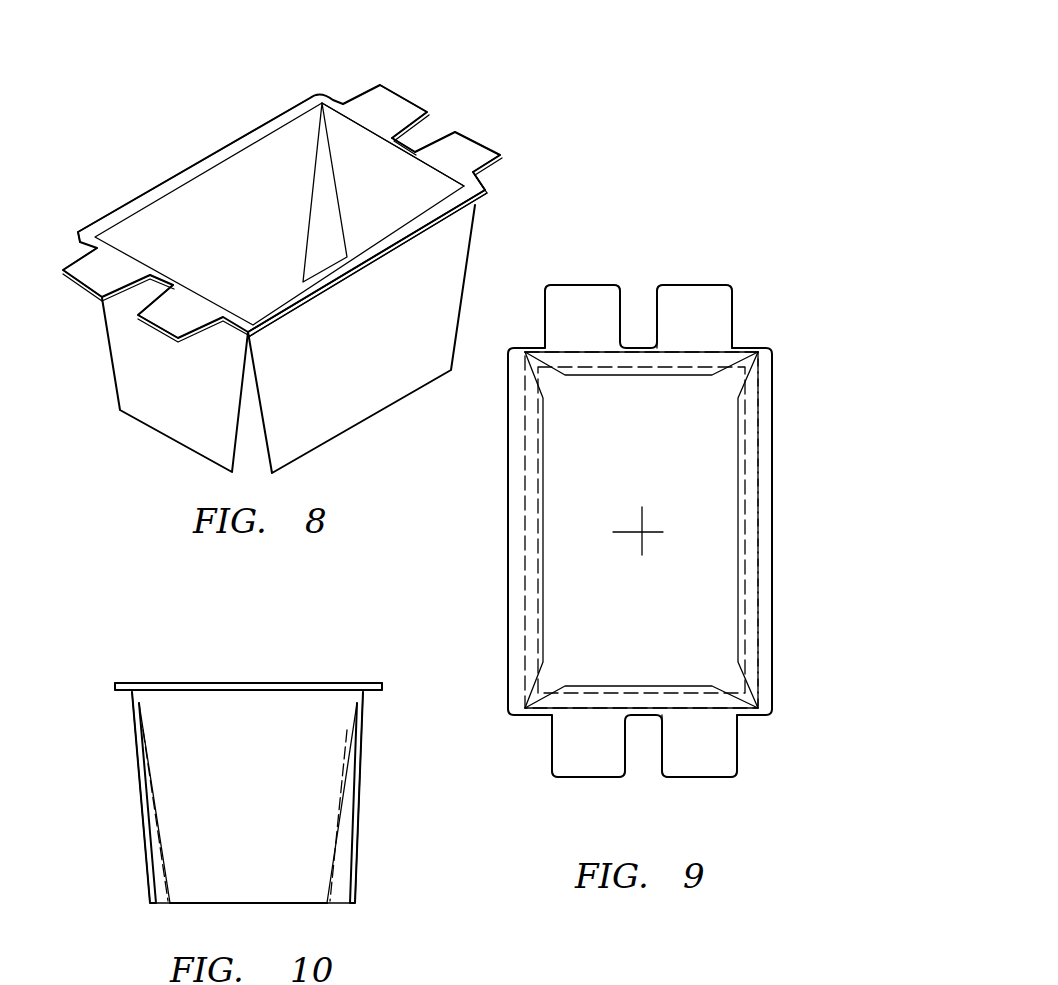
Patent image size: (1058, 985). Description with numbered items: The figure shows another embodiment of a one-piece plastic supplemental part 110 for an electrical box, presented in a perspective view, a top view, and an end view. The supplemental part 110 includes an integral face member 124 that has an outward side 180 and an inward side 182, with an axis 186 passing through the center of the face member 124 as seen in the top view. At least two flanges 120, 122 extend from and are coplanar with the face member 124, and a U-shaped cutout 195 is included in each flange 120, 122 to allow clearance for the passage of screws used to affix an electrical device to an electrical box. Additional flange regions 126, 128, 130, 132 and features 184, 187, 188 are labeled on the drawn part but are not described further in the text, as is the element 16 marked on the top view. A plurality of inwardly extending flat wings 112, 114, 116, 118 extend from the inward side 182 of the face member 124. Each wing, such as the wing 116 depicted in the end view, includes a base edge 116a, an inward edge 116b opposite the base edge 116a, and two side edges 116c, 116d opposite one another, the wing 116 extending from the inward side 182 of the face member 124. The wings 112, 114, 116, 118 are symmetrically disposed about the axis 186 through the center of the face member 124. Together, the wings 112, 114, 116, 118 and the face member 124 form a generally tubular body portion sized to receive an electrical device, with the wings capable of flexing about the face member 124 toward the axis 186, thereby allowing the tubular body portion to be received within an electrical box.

In FIG. 8, the supplemental part 110 is at (452, 75).
In FIG. 9, the supplemental part 110 is at (798, 310).
In FIG. 10, the supplemental part 110 is at (394, 778).
In FIG. 8, the wing 112 is at (395, 374).
In FIG. 10, the wing 112 is at (358, 837).
In FIG. 8, the wing 114 is at (263, 249).
In FIG. 10, the wing 114 is at (143, 883).
In FIG. 8, the wing 116 is at (210, 404).
In FIG. 10, the wing 116 is at (313, 804).
In FIG. 10, the base edge 116a is at (326, 691).
In FIG. 10, the inward edge 116b is at (287, 902).
In FIG. 10, the side edge 116c is at (158, 794).
In FIG. 10, the side edge 116d is at (338, 837).
In FIG. 8, the wing 118 is at (407, 207).
In FIG. 8, the flange 120 is at (130, 278).
In FIG. 9, the flange 120 is at (613, 756).
In FIG. 8, the flange 122 is at (405, 122).
In FIG. 9, the flange 122 is at (603, 328).
In FIG. 8, the face member 124 is at (87, 222).
In FIG. 9, the face member 124 is at (773, 606).
In FIG. 10, the face member 124 is at (318, 686).
In FIG. 8, the flange long side 126 is at (415, 235).
In FIG. 9, the flange long side 126 is at (768, 483).
In FIG. 8, the flange long side 128 is at (228, 152).
In FIG. 9, the flange long side 128 is at (516, 536).
In FIG. 8, the flange tab 130 is at (173, 313).
In FIG. 8, the flange tab 132 is at (468, 155).
In FIG. 8, the outward side 180 is at (318, 92).
In FIG. 10, the outward side 180 is at (208, 680).
In FIG. 8, the inward side 182 is at (458, 228).
In FIG. 10, the inward side 182 is at (236, 696).
In FIG. 8, the flange edge 184 is at (481, 176).
In FIG. 9, the axis 186 is at (644, 532).
In FIG. 8, the inner rim edge 187 is at (285, 138).
In FIG. 10, the flange end 188 is at (128, 702).
In FIG. 8, the U-shaped cutout 195 is at (143, 293).
In FIG. 9, the U-shaped cutout 195 is at (640, 280).
In FIG. 9, the bottom wall 16 is at (595, 700).